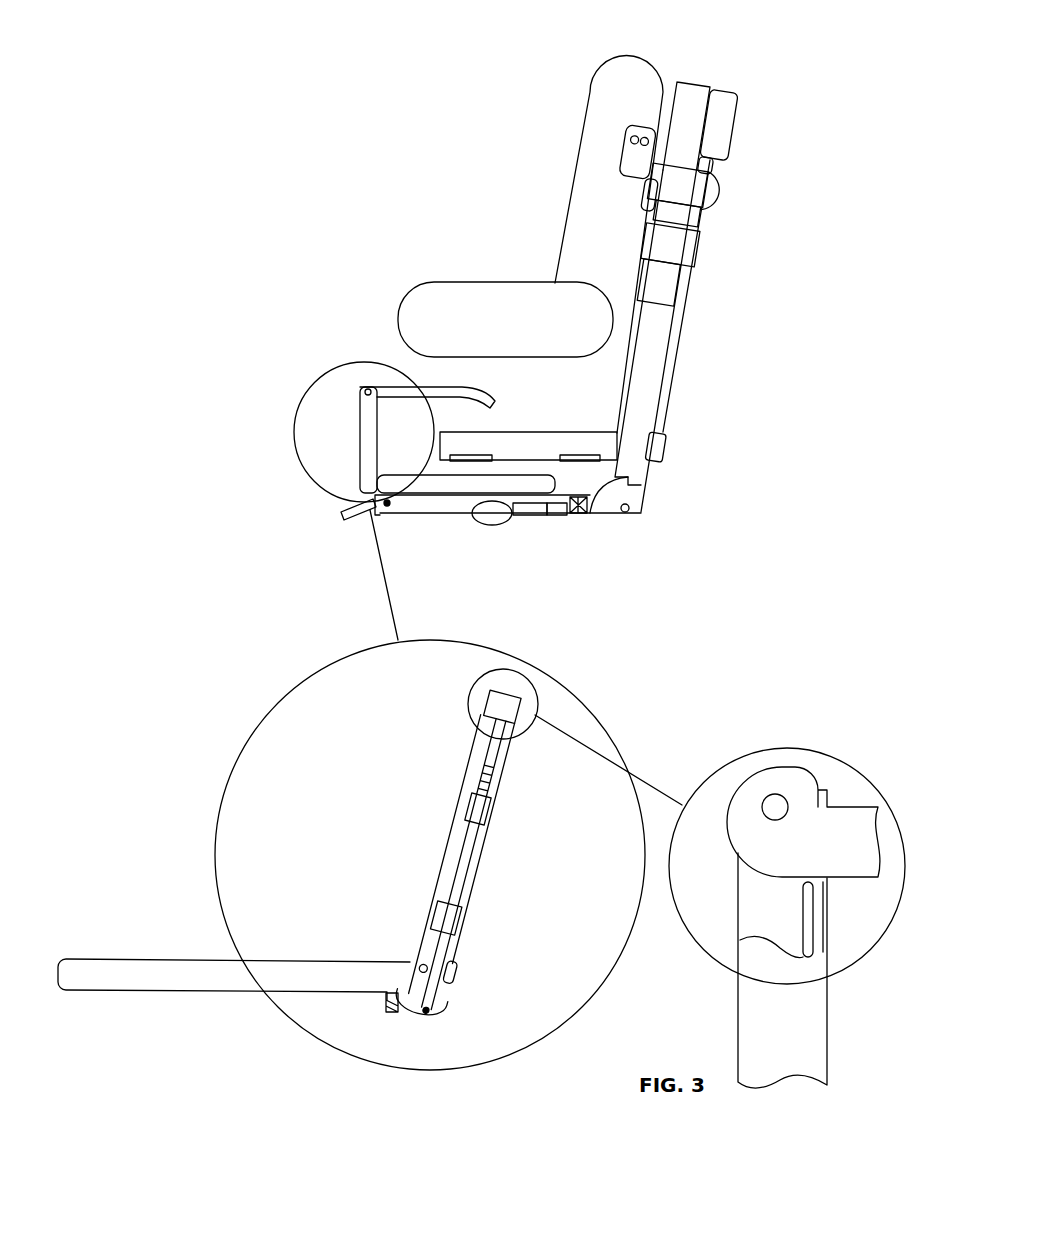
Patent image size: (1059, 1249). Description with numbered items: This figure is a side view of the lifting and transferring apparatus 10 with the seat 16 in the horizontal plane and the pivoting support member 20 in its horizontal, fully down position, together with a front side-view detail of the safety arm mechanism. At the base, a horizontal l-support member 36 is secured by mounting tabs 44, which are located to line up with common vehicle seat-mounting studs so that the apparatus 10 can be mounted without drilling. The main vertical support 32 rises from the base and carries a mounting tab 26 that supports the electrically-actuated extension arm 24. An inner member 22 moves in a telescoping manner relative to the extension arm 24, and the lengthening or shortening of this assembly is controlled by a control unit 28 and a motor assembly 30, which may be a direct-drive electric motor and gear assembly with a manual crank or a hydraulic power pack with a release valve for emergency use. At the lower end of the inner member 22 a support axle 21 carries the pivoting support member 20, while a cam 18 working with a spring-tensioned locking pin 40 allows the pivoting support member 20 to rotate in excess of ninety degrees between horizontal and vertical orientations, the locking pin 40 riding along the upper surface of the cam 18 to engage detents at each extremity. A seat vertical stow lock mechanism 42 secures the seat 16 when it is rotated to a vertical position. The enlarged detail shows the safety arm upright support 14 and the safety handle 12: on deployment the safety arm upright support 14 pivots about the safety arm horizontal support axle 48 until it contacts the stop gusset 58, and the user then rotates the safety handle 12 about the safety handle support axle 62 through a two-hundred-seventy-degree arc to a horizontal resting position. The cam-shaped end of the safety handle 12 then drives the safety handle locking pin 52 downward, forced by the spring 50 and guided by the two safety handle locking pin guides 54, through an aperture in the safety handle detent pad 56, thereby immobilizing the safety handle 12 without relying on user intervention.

The lifting and transferring apparatus 10 is at (398, 132).
The safety handle 12 is at (367, 388).
The safety arm upright support 14 is at (357, 438).
The seat 16 is at (418, 483).
The cam 18 is at (615, 497).
The pivoting support member 20 is at (437, 508).
The support axle 21 is at (642, 513).
The inner member 22 is at (645, 395).
The electrically-actuated extension arm 24 is at (688, 103).
The mounting tab 26 is at (678, 250).
The control unit 28 is at (635, 155).
The motor assembly 30 is at (722, 120).
The main vertical support 32 is at (677, 342).
The horizontal l-support member 36 is at (660, 452).
The locking pin 40 is at (557, 520).
The seat vertical stow lock mechanism 42 is at (347, 525).
The mounting tabs 44 is at (583, 455).
The safety arm horizontal support axle 48 is at (412, 963).
The spring 50 is at (482, 775).
The safety handle locking pin 52 is at (453, 962).
The safety handle locking pin guides 54 is at (446, 922).
The safety handle detent pad 56 is at (440, 1007).
The stop gusset 58 is at (387, 1008).
The safety handle support axle 62 is at (780, 800).